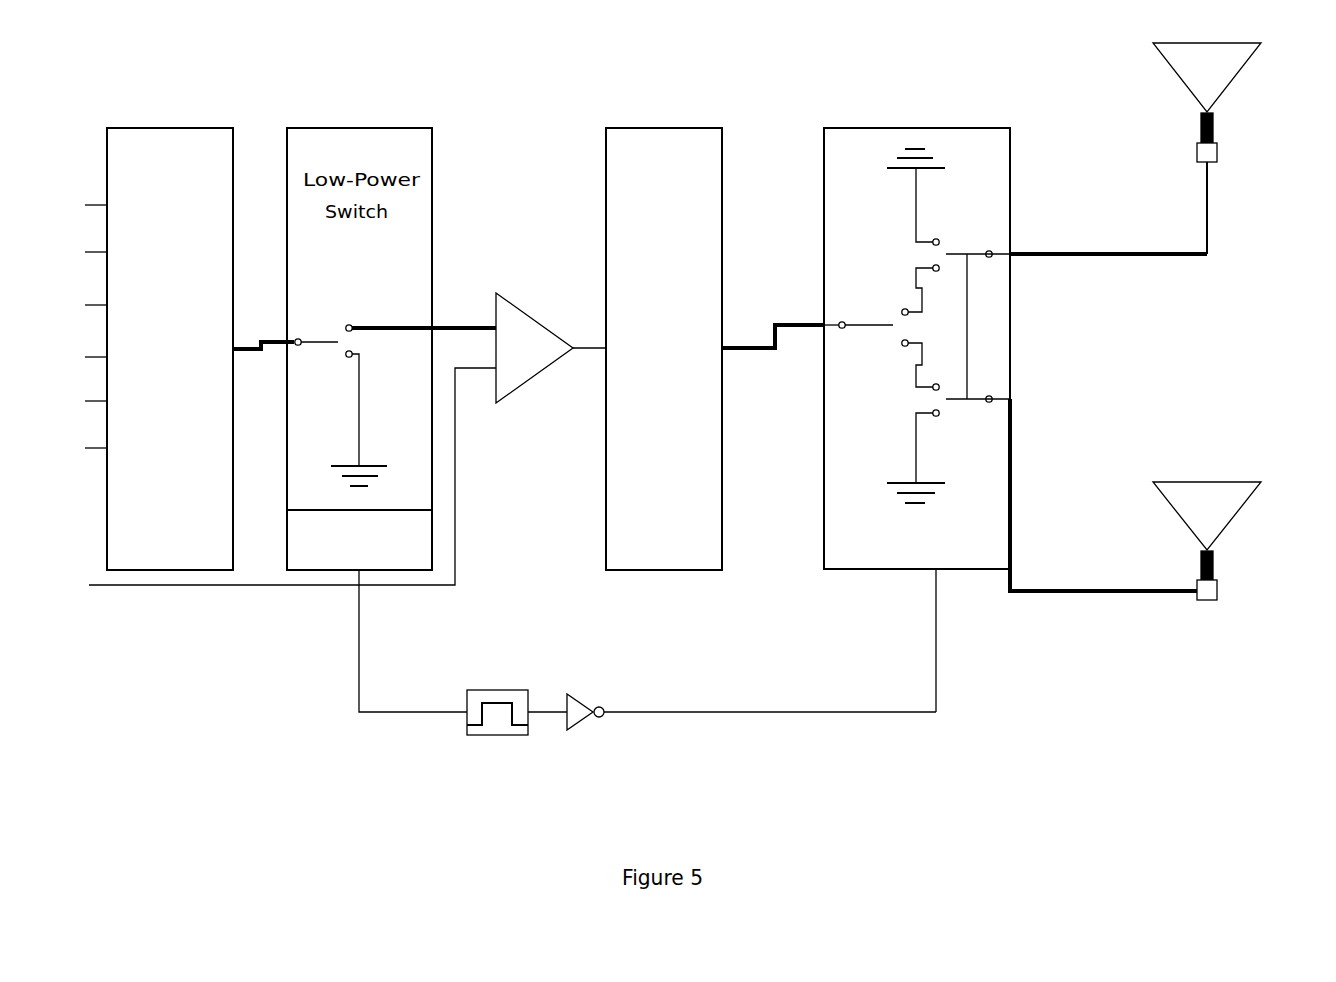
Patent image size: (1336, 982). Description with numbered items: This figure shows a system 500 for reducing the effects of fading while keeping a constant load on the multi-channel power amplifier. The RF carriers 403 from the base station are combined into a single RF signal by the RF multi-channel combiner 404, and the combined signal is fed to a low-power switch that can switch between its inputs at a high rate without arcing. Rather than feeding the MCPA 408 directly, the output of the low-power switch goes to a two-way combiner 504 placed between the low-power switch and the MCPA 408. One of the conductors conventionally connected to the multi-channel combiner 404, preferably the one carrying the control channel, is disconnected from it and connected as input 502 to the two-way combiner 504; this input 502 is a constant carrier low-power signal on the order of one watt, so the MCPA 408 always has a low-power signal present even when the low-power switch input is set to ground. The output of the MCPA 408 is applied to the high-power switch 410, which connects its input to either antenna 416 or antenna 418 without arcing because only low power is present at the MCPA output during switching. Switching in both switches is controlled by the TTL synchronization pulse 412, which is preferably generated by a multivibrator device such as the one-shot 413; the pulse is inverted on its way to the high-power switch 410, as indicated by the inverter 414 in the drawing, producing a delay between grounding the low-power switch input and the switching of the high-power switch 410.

The RF carriers 403 is at (54, 186).
The RF multi-channel combiner 404 is at (170, 349).
The multi-channel power amplifier (MCPA) 408 is at (715, 349).
The high-power switch 410 is at (940, 128).
The TTL synchronization pulse 412 is at (494, 710).
The one-shot 413 is at (507, 690).
The inverter 414 is at (565, 724).
The antenna 416 is at (1232, 85).
The antenna 418 is at (1236, 520).
The system 500 is at (278, 687).
The input 502 is at (470, 372).
The two-way combiner 504 is at (535, 313).